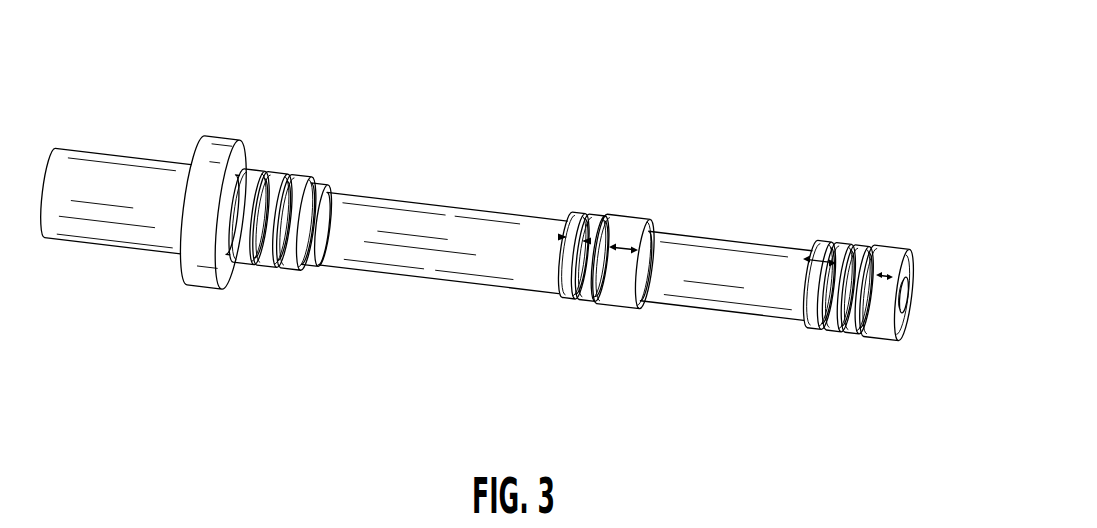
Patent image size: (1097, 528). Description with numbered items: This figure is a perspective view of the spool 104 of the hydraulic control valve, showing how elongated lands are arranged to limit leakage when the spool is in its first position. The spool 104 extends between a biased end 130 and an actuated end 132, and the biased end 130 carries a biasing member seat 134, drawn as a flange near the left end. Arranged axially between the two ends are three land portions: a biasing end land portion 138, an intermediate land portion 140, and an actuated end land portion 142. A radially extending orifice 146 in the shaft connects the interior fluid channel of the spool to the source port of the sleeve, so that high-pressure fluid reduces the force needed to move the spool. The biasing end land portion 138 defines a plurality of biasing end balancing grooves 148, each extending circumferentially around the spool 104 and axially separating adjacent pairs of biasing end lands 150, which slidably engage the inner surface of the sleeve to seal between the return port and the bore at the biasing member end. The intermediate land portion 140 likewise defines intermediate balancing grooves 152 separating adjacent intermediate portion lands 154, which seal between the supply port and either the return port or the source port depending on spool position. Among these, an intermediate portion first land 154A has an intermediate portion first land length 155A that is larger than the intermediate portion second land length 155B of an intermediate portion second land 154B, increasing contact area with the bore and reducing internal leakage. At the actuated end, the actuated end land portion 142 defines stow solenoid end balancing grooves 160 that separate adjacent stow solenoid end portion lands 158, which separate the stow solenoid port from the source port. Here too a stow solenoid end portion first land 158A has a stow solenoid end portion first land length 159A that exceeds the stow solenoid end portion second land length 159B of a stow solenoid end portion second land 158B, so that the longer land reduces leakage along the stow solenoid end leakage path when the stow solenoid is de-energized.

The spool 104 is at (183, 366).
The biased end 130 is at (96, 259).
The actuated end 132 is at (849, 371).
The biasing member seat 134 is at (218, 167).
The biasing end land portion 138 is at (292, 74).
The intermediate land portion 140 is at (643, 76).
The actuated end land portion 142 is at (907, 59).
The radially extending orifice 146 is at (668, 283).
The biasing end balancing grooves 148 is at (295, 240).
The biasing end lands 150 is at (315, 182).
The intermediate balancing grooves 152 is at (577, 290).
The intermediate portion lands 154 is at (537, 245).
The intermediate portion first land 154A is at (623, 278).
The intermediate portion second land 154B is at (565, 238).
The intermediate portion first land length 155A is at (640, 248).
The intermediate portion second land length 155B is at (557, 236).
The stow solenoid end portion lands 158 is at (865, 245).
The stow solenoid end portion first land 158A is at (883, 308).
The stow solenoid end portion second land 158B is at (820, 243).
The stow solenoid end portion first land length 159A is at (890, 272).
The stow solenoid end portion second land length 159B is at (812, 280).
The stow solenoid end balancing grooves 160 is at (845, 302).